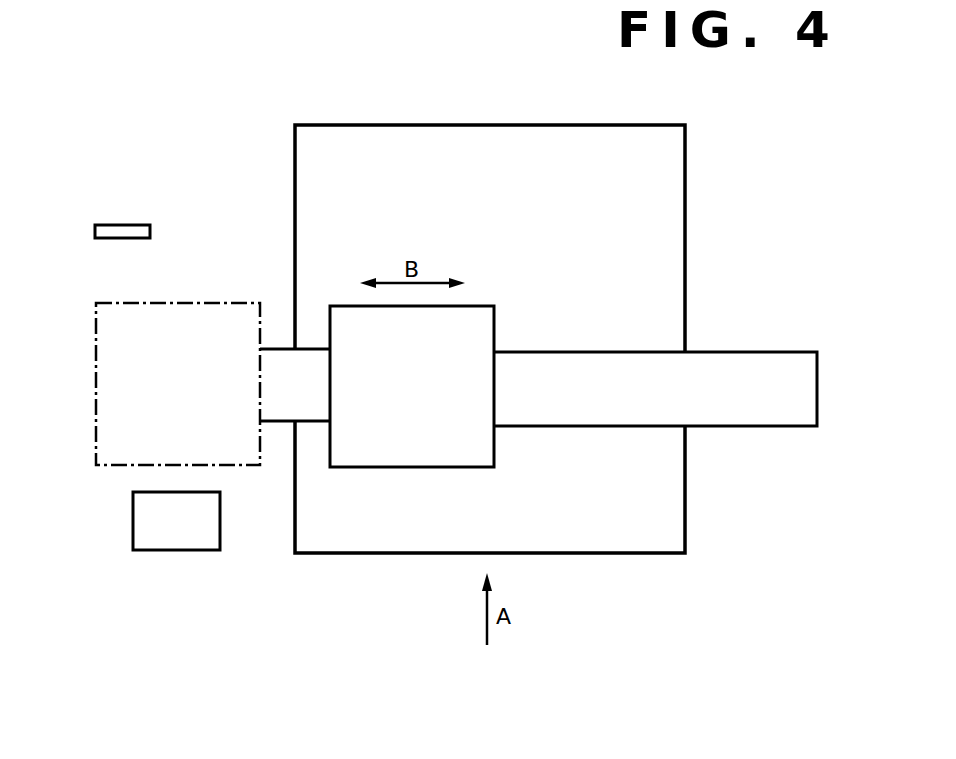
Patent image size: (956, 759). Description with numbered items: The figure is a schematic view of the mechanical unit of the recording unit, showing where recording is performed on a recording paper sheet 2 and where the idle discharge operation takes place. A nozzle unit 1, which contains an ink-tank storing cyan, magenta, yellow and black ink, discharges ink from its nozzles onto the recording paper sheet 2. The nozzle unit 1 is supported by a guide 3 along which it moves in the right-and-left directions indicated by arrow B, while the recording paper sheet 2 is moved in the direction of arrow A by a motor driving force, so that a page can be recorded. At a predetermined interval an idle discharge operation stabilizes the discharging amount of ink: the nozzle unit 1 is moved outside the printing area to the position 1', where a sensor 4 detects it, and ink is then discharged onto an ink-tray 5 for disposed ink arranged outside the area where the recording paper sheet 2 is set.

The nozzle unit 1 is at (423, 355).
The idle discharge position of the nozzle unit 1' is at (178, 358).
The recording paper sheet 2 is at (685, 217).
The guide 3 is at (760, 353).
The sensor 4 is at (167, 550).
The ink-tray 5 is at (122, 225).